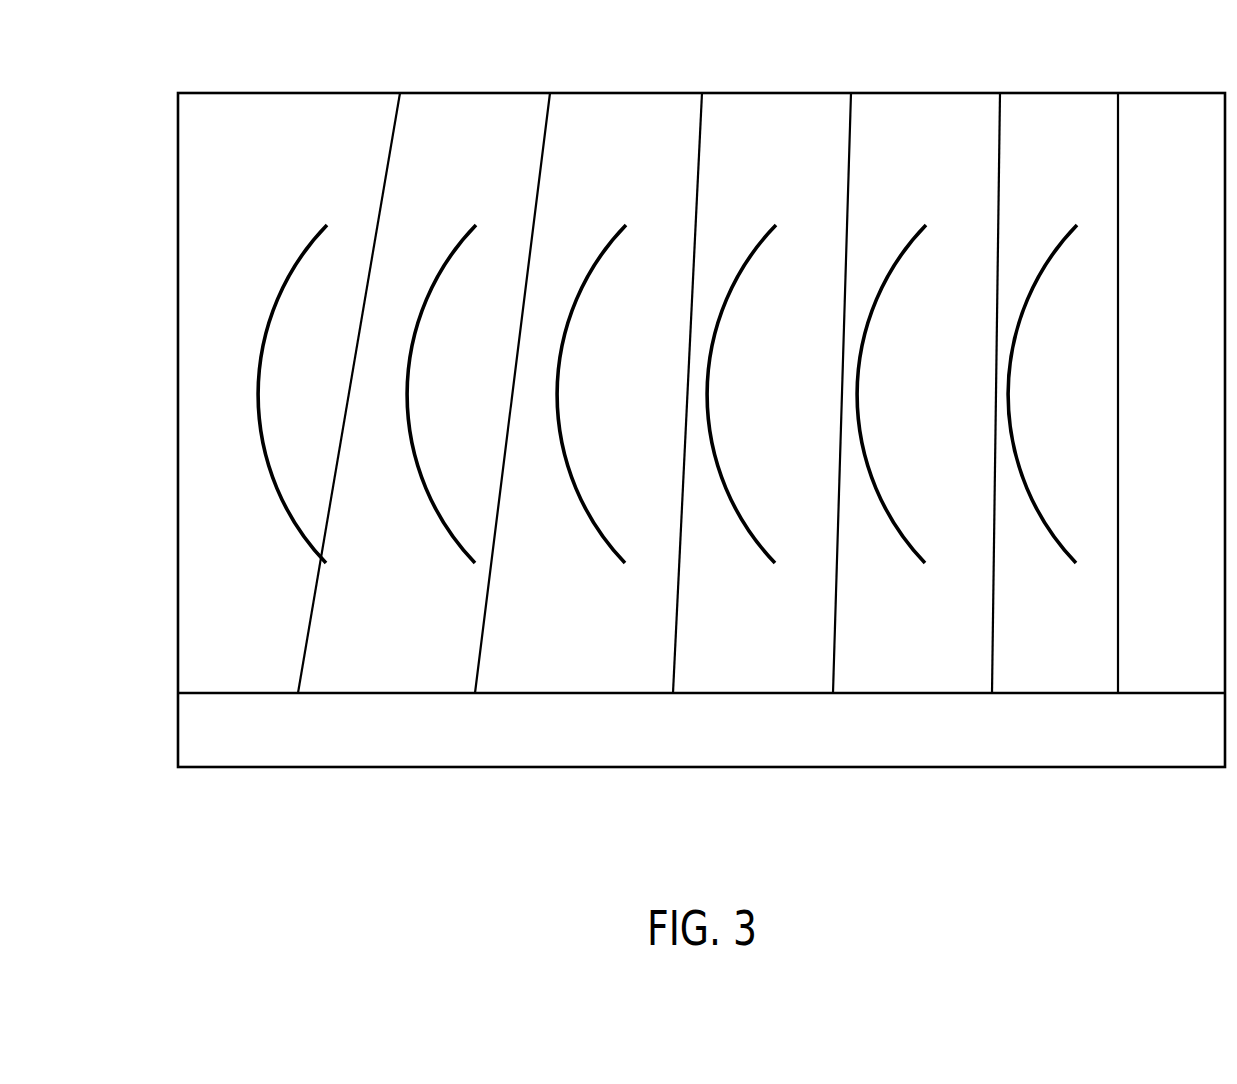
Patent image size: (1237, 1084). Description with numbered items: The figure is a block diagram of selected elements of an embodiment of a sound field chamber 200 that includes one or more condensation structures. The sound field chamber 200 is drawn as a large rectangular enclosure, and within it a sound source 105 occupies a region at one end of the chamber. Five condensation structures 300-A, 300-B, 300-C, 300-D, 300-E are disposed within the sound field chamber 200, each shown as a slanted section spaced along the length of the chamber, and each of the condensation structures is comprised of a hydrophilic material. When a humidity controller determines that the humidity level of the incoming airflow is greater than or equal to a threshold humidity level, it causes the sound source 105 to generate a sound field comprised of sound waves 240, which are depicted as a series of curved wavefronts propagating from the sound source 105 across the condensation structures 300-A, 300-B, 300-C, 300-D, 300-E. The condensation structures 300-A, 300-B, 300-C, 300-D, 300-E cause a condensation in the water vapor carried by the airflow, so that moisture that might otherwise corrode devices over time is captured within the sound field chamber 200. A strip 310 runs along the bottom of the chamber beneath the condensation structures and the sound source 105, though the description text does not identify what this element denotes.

The sound field chamber 200 is at (232, 93).
The condensation structure 300-A is at (390, 157).
The condensation structure 300-B is at (541, 157).
The condensation structure 300-C is at (698, 157).
The condensation structure 300-D is at (850, 157).
The condensation structure 300-E is at (1000, 157).
The sound waves 240 is at (1025, 487).
The sound source 105 is at (1188, 404).
The base strip 310 is at (717, 740).